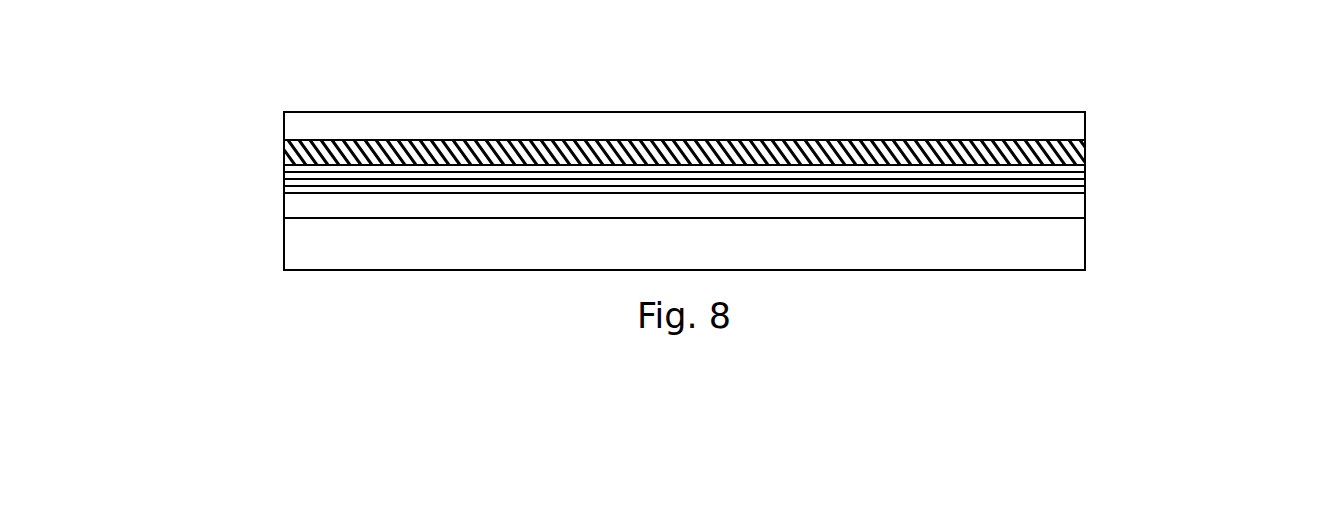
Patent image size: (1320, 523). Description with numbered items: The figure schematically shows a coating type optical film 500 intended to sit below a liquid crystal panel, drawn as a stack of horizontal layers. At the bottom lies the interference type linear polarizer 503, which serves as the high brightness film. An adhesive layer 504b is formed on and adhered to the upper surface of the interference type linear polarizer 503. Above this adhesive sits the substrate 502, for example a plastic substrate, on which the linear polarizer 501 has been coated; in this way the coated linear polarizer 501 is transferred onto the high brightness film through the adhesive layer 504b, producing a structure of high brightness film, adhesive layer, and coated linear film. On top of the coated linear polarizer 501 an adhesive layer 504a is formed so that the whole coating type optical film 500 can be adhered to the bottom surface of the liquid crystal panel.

The coating type optical film 500 is at (1238, 208).
The linear polarizer 501 is at (1082, 155).
The substrate 502 is at (1080, 179).
The interference type linear polarizer 503 is at (1075, 243).
The adhesive layer 504a is at (298, 127).
The adhesive layer 504b is at (303, 207).